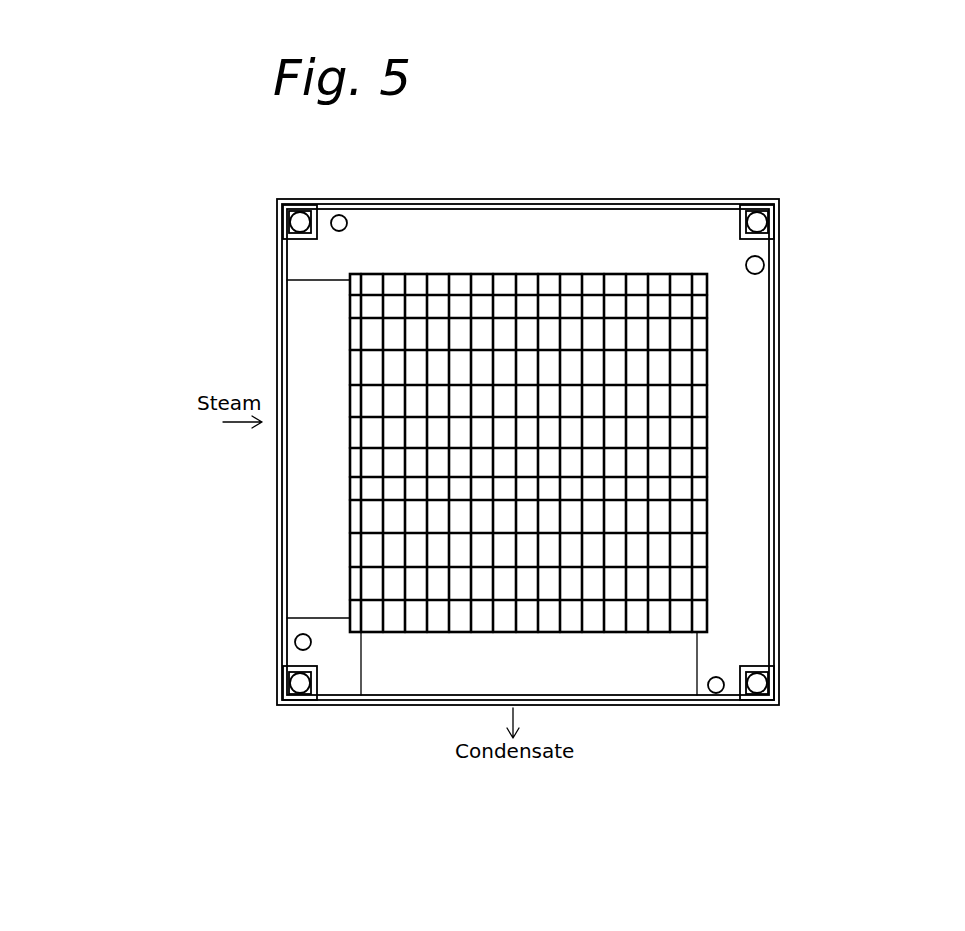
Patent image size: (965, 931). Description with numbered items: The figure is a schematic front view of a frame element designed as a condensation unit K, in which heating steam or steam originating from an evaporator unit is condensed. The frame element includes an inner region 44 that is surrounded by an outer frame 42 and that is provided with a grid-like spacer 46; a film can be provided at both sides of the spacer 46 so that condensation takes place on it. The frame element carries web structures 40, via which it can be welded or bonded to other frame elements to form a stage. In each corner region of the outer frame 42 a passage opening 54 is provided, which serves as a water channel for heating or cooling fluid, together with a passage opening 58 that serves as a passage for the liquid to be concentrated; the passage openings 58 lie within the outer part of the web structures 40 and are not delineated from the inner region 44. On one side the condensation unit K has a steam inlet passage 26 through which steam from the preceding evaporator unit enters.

The condensation unit K is at (841, 166).
The steam inlet passage 26 is at (297, 523).
The web structures 40 is at (343, 202).
The outer frame 42 is at (585, 250).
The inner region 44 is at (677, 348).
The spacer 46 is at (678, 385).
The passage openings 54 is at (300, 680).
The passage openings 58 is at (752, 263).